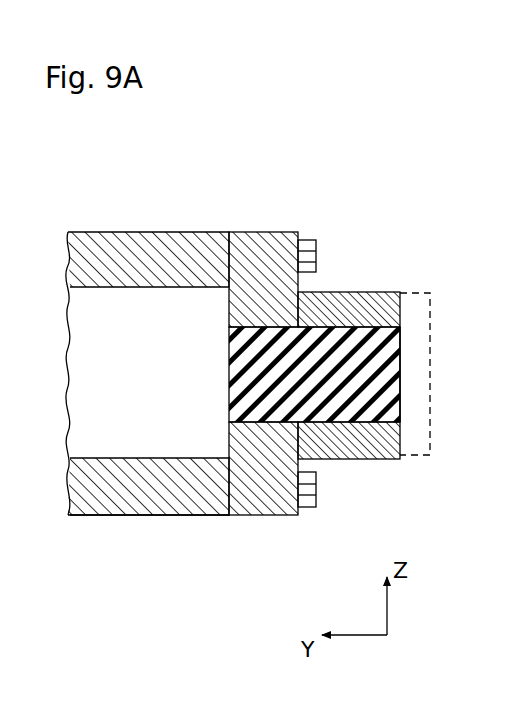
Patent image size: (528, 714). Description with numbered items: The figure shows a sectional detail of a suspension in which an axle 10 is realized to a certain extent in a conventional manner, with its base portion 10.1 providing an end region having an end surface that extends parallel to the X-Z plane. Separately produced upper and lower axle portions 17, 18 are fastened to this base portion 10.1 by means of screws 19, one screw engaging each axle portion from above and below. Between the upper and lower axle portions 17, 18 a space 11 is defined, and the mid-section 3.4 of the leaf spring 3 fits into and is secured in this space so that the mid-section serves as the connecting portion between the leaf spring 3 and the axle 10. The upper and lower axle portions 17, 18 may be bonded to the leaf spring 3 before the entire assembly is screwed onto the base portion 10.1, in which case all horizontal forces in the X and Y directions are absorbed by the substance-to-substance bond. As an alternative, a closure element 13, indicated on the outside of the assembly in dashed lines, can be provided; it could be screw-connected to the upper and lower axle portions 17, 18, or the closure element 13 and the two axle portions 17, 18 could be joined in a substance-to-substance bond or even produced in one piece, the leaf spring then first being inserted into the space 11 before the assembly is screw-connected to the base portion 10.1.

The axle 10 is at (168, 232).
The base portion 10.1 is at (181, 538).
The space 11 is at (262, 315).
The closure element 13 is at (432, 300).
The upper axle portion 17 is at (362, 292).
The lower axle portion 18 is at (272, 515).
The screws 19 is at (308, 240).
The leaf spring 3 is at (401, 322).
The mid-section 3.4 is at (403, 418).